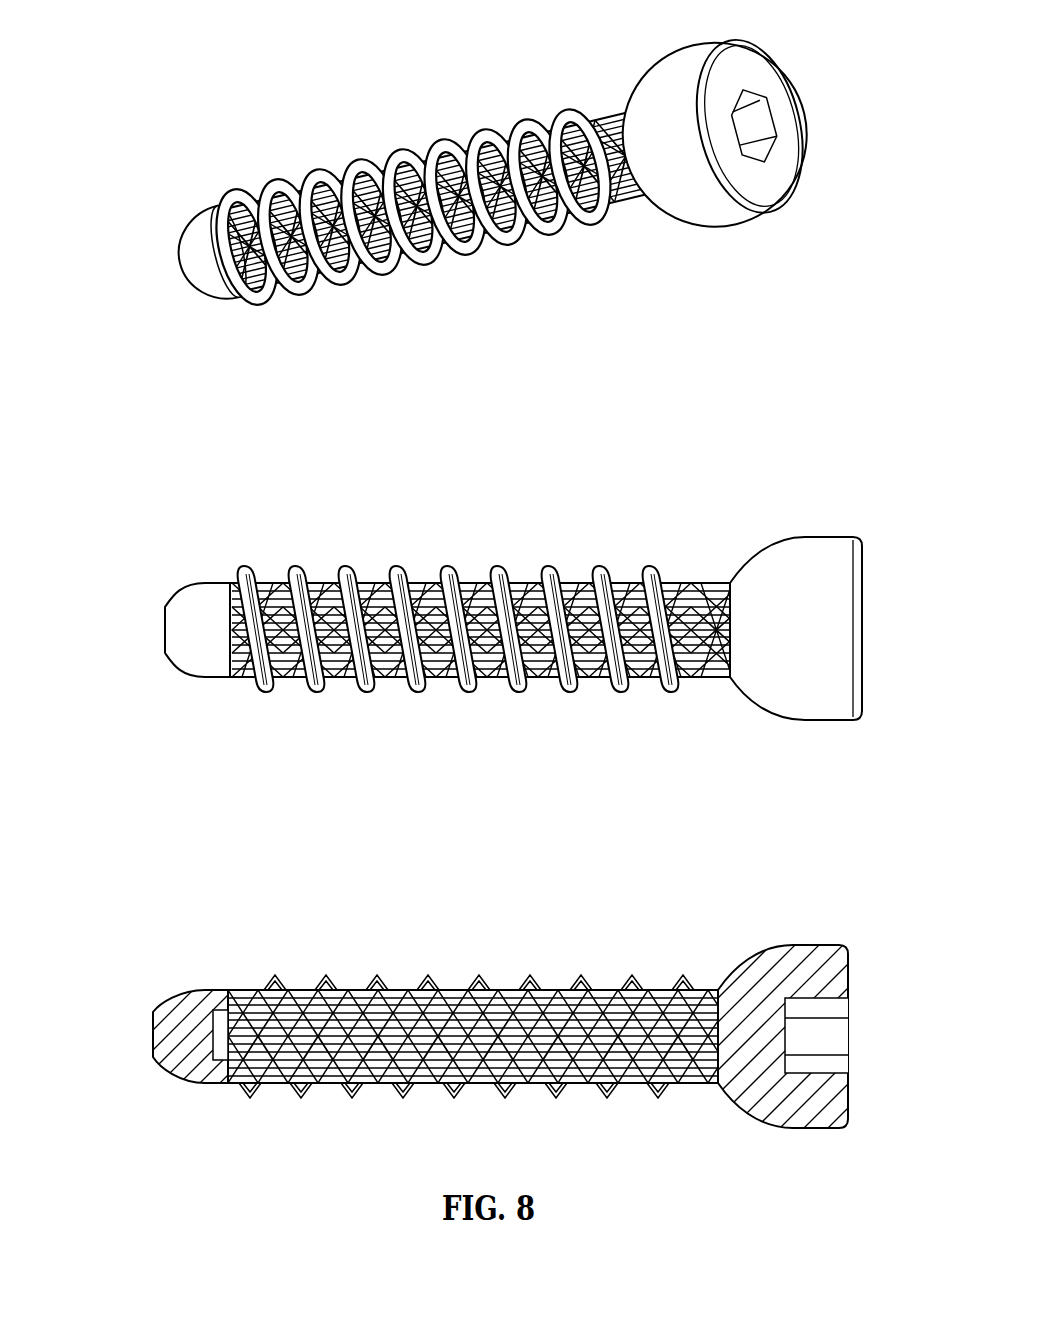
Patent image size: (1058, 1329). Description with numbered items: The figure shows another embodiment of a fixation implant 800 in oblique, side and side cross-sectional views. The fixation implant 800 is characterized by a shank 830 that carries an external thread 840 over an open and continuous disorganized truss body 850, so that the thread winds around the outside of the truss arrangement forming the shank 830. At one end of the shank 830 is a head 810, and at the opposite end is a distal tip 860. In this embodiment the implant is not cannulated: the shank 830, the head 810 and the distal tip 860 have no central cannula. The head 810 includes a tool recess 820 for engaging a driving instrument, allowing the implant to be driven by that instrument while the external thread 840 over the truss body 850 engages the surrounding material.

The fixation implant 800 is at (188, 61).
The head 810 is at (682, 47).
The tool recess 820 is at (753, 128).
The shank 830 is at (419, 150).
The external thread 840 is at (324, 168).
The open and continuous disorganized truss body 850 is at (452, 250).
The distal tip 860 is at (198, 228).